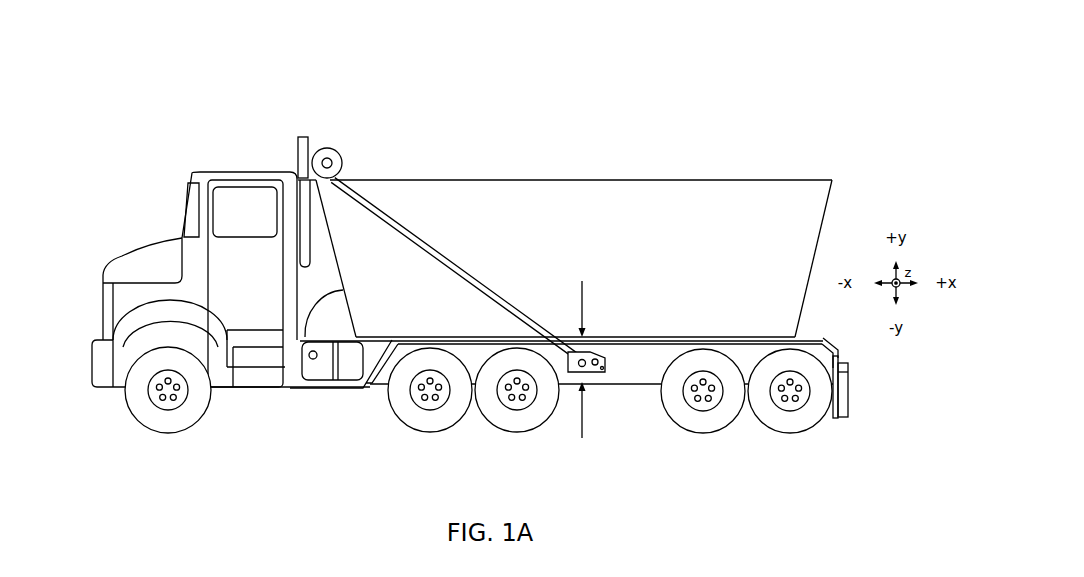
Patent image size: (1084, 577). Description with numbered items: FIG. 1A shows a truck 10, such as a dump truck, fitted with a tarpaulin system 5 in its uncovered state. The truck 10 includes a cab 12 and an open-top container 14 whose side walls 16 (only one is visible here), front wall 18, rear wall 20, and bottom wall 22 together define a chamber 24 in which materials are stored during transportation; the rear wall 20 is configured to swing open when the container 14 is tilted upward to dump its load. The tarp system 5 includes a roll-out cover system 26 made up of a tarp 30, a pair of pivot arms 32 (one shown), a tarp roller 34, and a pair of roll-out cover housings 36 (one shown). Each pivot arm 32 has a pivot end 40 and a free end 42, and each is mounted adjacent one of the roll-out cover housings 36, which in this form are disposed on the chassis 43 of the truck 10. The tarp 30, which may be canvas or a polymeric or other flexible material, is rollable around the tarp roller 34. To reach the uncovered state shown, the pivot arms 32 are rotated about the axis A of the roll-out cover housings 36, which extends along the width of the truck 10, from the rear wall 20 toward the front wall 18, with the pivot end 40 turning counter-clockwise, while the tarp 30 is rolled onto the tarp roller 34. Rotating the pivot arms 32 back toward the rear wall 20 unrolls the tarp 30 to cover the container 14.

The truck 10 is at (148, 186).
The cab 12 is at (108, 258).
The container 14 is at (585, 130).
The side wall 16 is at (698, 210).
The front wall 18 is at (307, 338).
The rear wall 20 is at (824, 228).
The bottom wall 22 is at (640, 343).
The chamber 24 is at (521, 163).
The roll-out cover system 26 is at (633, 260).
The tarp 30 is at (324, 148).
The pivot arm 32 is at (455, 258).
The tarp roller 34 is at (336, 162).
The roll-out cover housing 36 is at (590, 357).
The pivot end 40 is at (580, 297).
The free end 42 is at (313, 124).
The chassis 43 is at (651, 382).
The tarpaulin system 5 is at (580, 421).
The axis A is at (600, 350).